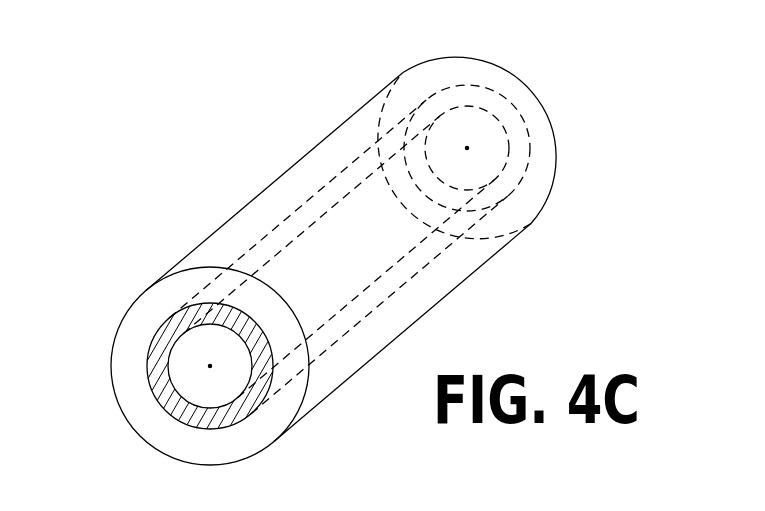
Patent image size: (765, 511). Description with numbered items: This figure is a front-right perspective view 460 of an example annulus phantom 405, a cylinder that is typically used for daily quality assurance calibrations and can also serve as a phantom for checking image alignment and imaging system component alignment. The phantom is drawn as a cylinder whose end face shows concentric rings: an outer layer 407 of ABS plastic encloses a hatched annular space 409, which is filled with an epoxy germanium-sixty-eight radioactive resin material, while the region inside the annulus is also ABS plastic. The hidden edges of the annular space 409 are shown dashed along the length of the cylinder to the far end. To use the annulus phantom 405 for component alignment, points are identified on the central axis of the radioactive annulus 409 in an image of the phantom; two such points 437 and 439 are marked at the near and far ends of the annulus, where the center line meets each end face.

The annulus phantom 405 is at (150, 257).
The outer layer 407 is at (147, 305).
The annular space 409 is at (165, 355).
The point 437 is at (206, 369).
The point 439 is at (470, 147).
The front-right perspective view 460 is at (592, 72).